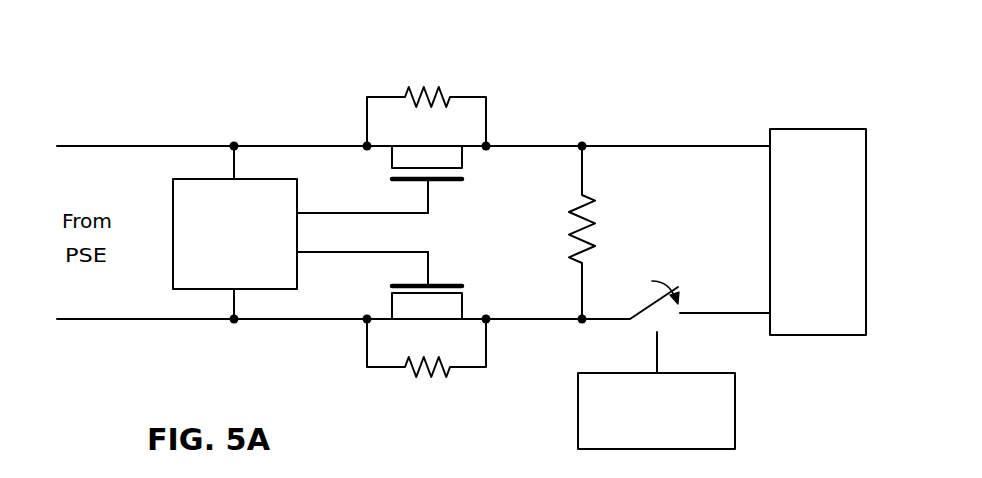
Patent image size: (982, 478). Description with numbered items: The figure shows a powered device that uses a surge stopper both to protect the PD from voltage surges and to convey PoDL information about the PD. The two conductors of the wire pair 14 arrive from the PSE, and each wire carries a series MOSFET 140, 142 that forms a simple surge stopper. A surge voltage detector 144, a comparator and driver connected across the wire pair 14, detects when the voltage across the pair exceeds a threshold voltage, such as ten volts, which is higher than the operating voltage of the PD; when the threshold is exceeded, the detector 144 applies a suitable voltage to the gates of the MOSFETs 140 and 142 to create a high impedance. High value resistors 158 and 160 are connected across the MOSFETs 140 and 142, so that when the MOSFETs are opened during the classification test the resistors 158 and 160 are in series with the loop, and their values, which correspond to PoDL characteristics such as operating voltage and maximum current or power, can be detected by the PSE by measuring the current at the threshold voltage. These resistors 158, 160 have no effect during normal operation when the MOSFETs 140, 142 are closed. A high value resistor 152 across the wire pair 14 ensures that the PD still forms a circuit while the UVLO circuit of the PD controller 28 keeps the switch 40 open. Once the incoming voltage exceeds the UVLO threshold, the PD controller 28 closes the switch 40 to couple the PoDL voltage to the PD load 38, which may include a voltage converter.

The wire pair 14 is at (153, 146).
The surge voltage detector 144 is at (173, 200).
The high value resistor 158 is at (440, 92).
The MOSFET 140 is at (466, 161).
The MOSFET 142 is at (466, 304).
The high value resistor 160 is at (423, 378).
The high value resistor 152 is at (598, 222).
The switch 40 is at (690, 293).
The PD load 38 is at (806, 129).
The PD controller 28 is at (737, 410).